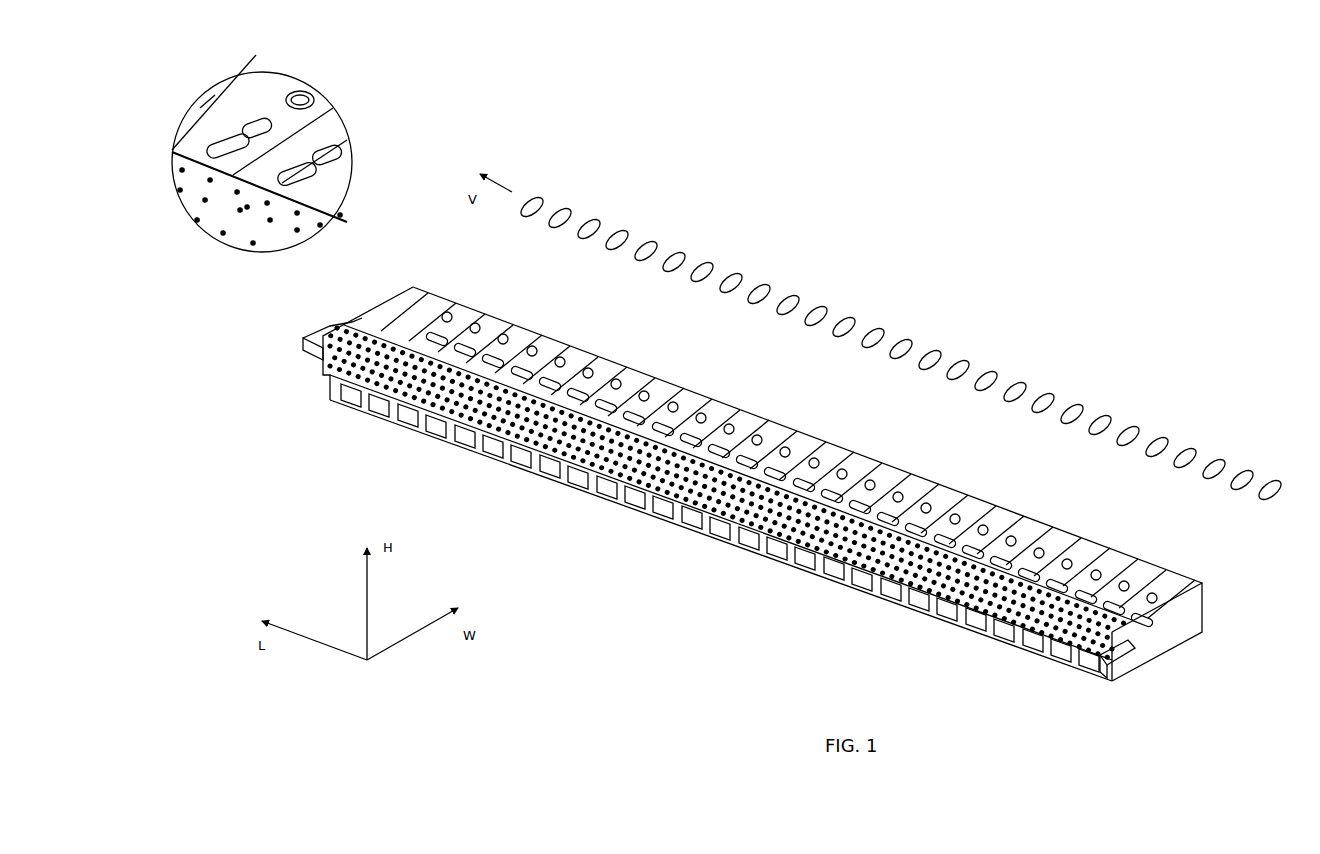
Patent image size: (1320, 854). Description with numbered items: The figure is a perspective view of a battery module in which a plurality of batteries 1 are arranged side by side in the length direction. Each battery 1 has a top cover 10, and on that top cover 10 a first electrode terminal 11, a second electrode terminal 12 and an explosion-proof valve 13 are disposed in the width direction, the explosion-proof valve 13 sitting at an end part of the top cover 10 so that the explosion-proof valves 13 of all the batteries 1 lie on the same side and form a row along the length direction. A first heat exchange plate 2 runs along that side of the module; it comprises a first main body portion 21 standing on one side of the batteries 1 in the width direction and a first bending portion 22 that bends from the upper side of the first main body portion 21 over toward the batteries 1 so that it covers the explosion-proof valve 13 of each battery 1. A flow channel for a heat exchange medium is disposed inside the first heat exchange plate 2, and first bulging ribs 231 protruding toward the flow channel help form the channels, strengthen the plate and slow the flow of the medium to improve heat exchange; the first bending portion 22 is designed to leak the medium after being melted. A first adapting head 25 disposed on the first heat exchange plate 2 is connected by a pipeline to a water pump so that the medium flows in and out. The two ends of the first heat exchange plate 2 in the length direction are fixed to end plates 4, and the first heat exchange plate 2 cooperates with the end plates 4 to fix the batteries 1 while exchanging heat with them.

The battery 1 is at (368, 310).
The first heat exchange plate 2 is at (304, 360).
The end plate 4 is at (386, 290).
The top cover 10 is at (497, 313).
The first electrode terminal 11 is at (422, 300).
The second electrode terminal 12 is at (452, 304).
The explosion-proof valve 13 is at (602, 214).
The first main body portion 21 is at (378, 406).
The first bending portion 22 is at (437, 424).
The first bulging rib 231 is at (479, 434).
The first adapting head 25 is at (1132, 668).